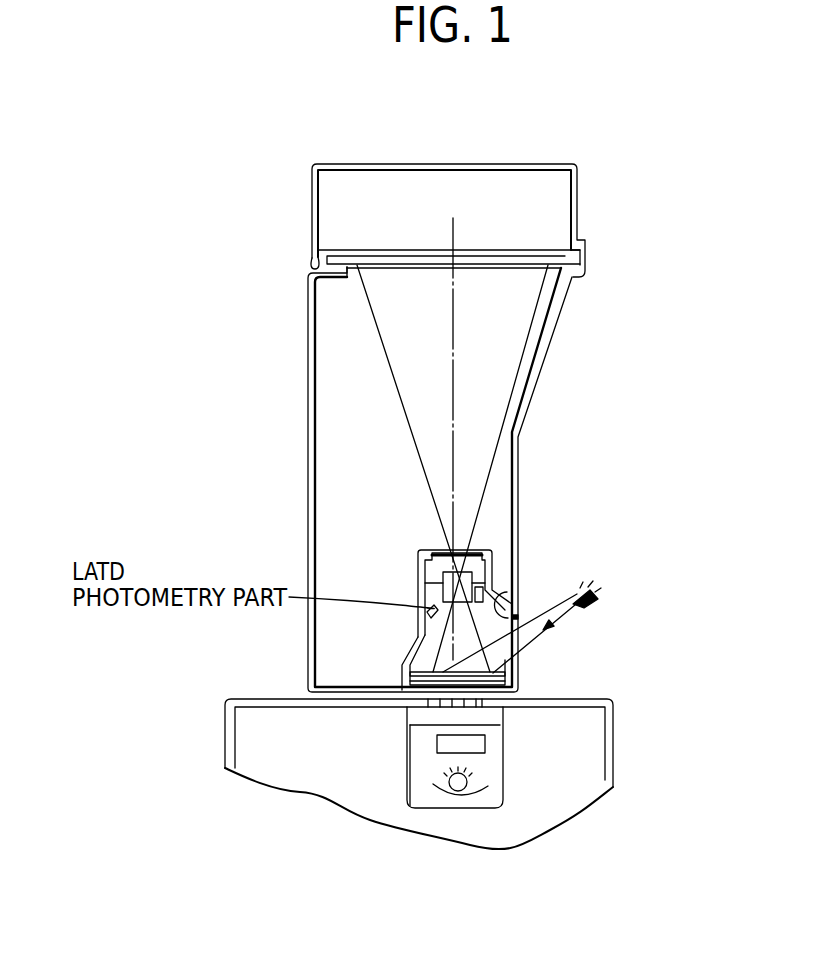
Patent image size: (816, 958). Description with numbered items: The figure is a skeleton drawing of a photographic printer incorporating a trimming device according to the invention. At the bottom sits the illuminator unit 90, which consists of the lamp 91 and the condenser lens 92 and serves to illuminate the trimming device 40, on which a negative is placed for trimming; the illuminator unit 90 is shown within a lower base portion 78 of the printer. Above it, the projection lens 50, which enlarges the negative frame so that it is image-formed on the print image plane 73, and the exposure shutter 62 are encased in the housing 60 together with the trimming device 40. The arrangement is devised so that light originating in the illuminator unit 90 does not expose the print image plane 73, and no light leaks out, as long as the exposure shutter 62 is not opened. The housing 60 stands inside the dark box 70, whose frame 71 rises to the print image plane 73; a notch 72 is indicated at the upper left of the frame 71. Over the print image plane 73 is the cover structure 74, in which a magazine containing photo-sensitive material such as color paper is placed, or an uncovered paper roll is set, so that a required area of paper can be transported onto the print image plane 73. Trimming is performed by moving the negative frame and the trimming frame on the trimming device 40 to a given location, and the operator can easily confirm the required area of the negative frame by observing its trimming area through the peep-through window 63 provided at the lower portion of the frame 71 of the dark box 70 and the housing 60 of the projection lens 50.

The trimming device 40 is at (417, 683).
The projection lens 50 is at (432, 570).
The housing 60 is at (500, 560).
The exposure shutter 62 is at (480, 548).
The peep-through window 63 is at (500, 590).
The dark box 70 is at (575, 308).
The frame 71 is at (541, 362).
The notch 72 is at (341, 276).
The print image plane 73 is at (365, 260).
The cover structure 74 is at (575, 165).
The base 78 is at (615, 730).
The illuminator unit 90 is at (514, 738).
The lamp 91 is at (448, 782).
The condenser lens 92 is at (437, 745).